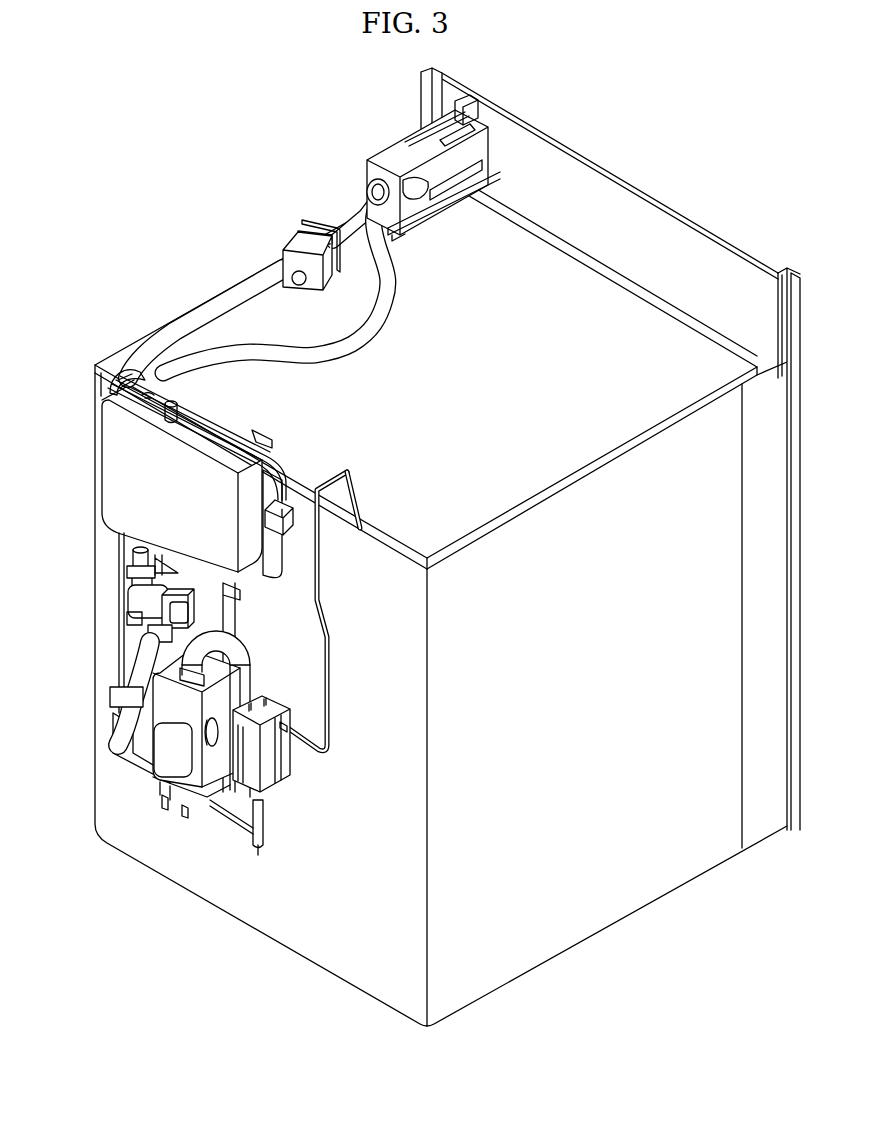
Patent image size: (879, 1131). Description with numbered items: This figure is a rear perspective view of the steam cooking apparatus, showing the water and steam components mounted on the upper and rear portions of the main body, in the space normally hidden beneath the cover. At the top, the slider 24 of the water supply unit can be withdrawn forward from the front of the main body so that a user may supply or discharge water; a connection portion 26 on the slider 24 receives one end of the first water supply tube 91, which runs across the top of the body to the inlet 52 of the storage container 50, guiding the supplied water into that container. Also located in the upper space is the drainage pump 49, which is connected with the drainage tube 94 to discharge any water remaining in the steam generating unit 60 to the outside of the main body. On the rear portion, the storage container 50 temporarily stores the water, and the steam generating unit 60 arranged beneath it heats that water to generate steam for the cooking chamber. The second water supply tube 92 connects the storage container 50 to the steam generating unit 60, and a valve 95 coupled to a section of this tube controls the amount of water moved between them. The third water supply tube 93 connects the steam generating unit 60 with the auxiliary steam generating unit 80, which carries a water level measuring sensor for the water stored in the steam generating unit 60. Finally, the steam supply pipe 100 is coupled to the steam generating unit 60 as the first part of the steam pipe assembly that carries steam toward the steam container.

The slider 24 is at (366, 170).
The connection portion 26 is at (367, 190).
The drainage pump 49 is at (283, 253).
The storage container 50 is at (113, 440).
The inlet 52 is at (136, 370).
The steam generating unit 60 is at (172, 718).
The auxiliary steam generating unit 80 is at (247, 788).
The first water supply tube 91 is at (393, 310).
The second water supply tube 92 is at (133, 660).
The third water supply tube 93 is at (258, 805).
The drainage tube 94 is at (197, 330).
The valve 95 is at (155, 603).
The steam supply pipe 100 is at (193, 775).